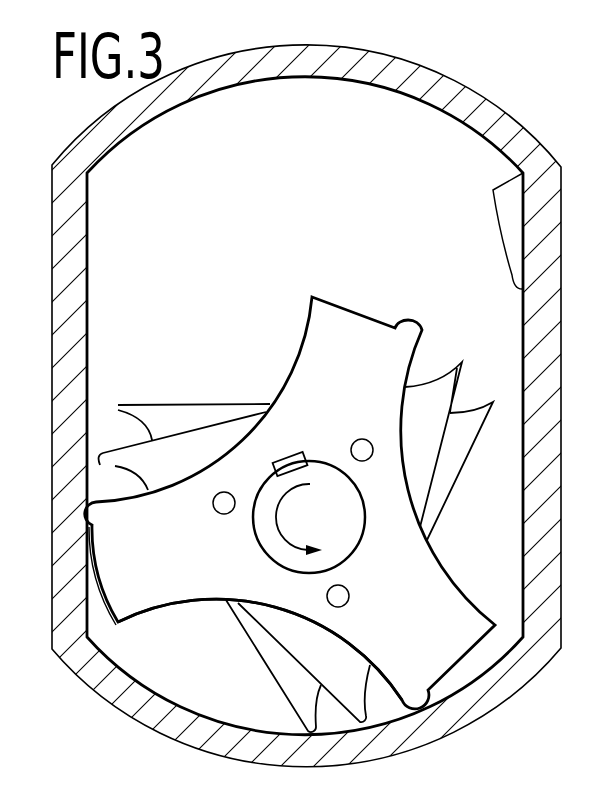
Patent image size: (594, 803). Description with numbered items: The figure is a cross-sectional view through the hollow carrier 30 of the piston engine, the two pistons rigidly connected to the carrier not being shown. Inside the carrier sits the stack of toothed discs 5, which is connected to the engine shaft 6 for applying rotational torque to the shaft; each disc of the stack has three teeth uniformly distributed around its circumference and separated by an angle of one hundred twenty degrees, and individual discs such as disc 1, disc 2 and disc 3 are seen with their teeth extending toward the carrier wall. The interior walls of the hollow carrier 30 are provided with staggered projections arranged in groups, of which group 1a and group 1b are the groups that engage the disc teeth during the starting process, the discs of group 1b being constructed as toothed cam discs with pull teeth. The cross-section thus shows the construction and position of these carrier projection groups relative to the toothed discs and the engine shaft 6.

The hollow carrier 30 is at (493, 118).
The toothed disc 1 is at (301, 496).
The projection group Ia 1a is at (107, 590).
The projection group Ib 1b is at (500, 226).
The toothed disc 2 is at (306, 521).
The toothed disc 3 is at (306, 558).
The stack of toothed discs 5 is at (225, 581).
The engine shaft 6 is at (352, 510).